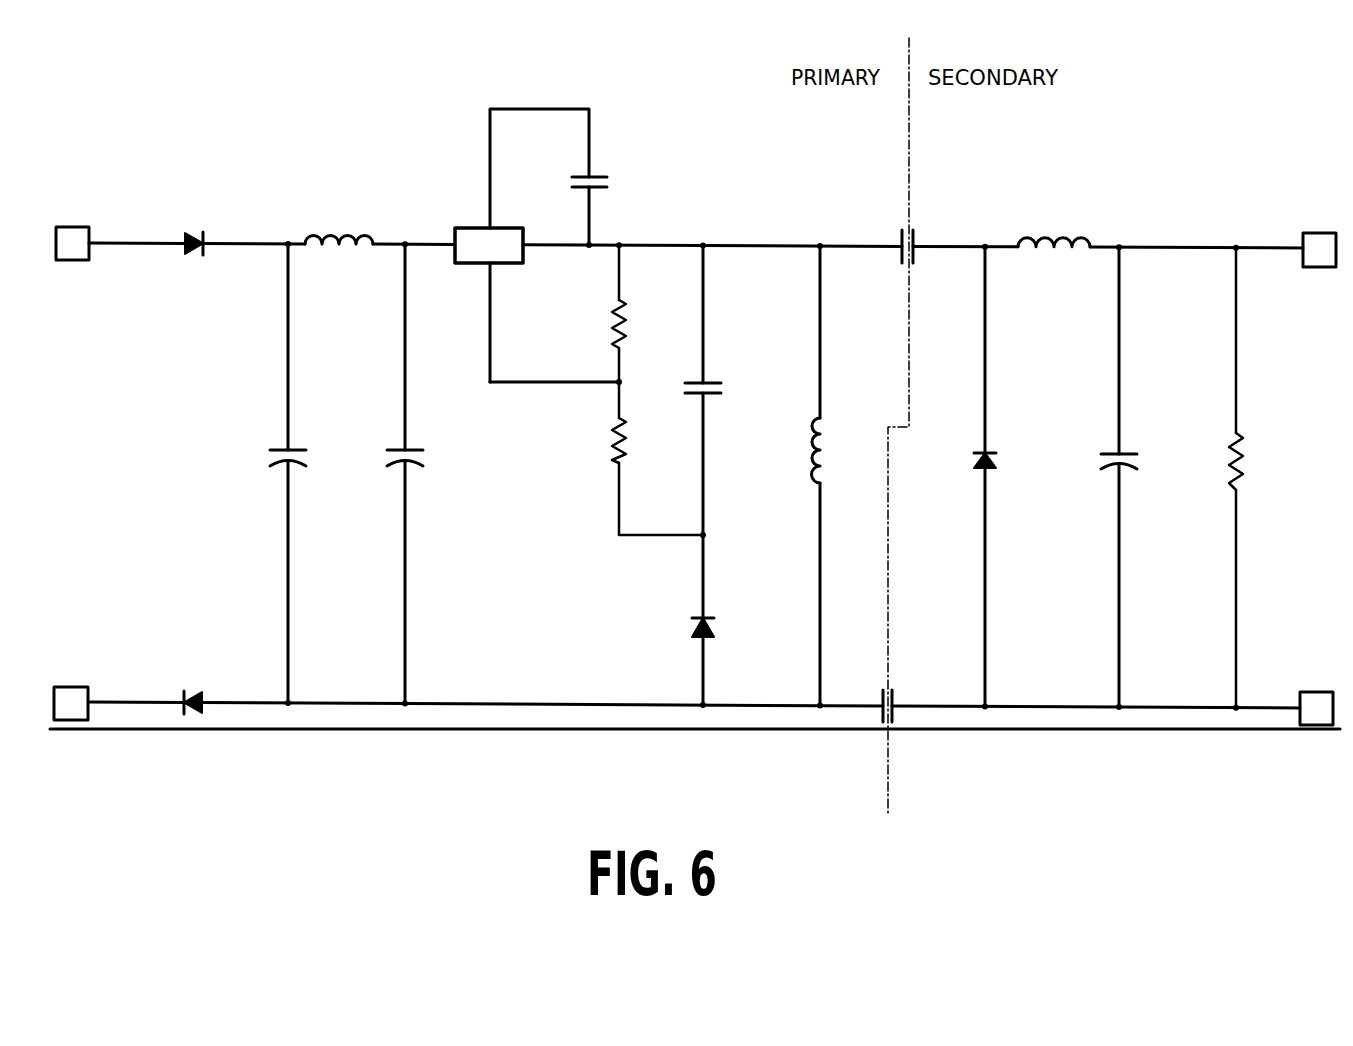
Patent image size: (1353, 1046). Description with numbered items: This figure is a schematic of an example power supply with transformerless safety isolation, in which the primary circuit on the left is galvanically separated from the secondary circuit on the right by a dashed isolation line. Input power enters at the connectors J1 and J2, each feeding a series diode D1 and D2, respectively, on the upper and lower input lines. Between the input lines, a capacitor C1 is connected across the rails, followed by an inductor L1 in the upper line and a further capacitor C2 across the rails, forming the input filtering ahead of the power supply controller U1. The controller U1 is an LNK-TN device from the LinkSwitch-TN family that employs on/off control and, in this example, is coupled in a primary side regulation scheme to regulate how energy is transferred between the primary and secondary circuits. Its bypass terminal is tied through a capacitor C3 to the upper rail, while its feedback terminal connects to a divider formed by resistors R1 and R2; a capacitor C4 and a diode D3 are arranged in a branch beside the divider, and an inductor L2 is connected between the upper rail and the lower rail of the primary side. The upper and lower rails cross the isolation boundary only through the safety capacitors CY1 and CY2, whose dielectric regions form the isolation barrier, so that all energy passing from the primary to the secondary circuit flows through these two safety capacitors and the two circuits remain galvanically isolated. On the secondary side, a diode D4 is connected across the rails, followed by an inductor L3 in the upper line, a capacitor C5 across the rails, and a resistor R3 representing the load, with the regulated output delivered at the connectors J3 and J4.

The input connector J1 is at (83, 229).
The input connector J2 is at (81, 689).
The output connector J3 is at (1308, 233).
The output connector J4 is at (1305, 693).
The input diode D1 is at (189, 228).
The input diode D2 is at (189, 688).
The diode D3 is at (726, 620).
The output diode D4 is at (1009, 477).
The input inductor L1 is at (339, 222).
The inductor L2 is at (837, 476).
The output inductor L3 is at (1054, 223).
The input capacitor C1 is at (264, 473).
The input capacitor C2 is at (390, 473).
The bypass capacitor C3 is at (614, 211).
The capacitor C4 is at (726, 391).
The output capacitor C5 is at (1143, 477).
The safety capacitor CY1 is at (905, 230).
The safety capacitor CY2 is at (885, 689).
The resistor R1 is at (644, 313).
The resistor R2 is at (657, 458).
The load resistor R3 is at (1255, 478).
The power supply controller U1 is at (478, 245).